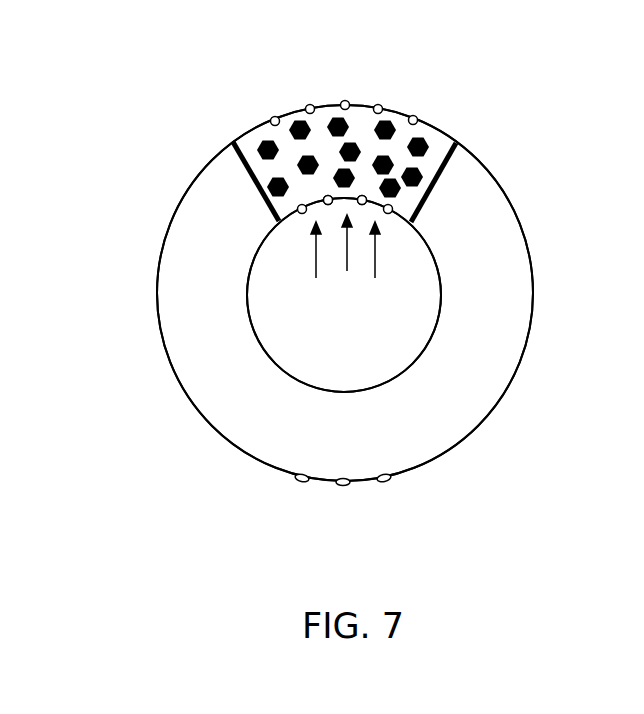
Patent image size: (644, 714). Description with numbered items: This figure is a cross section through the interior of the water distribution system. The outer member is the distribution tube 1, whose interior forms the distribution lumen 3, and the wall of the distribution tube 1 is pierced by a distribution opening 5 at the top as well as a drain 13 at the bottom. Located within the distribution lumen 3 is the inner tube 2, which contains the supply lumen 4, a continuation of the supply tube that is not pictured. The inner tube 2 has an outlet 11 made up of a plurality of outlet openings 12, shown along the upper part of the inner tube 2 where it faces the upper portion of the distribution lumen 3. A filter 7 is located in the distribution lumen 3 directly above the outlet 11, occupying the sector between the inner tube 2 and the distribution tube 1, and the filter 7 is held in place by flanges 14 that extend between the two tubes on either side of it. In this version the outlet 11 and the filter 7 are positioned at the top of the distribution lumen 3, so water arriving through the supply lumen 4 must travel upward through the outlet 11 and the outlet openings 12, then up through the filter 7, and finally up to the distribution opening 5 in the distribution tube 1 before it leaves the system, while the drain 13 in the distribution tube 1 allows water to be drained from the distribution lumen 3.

The distribution tube 1 is at (502, 192).
The inner tube 2 is at (420, 353).
The distribution lumen 3 is at (502, 332).
The supply lumen 4 is at (268, 310).
The distribution opening 5 is at (415, 117).
The filter 7 is at (428, 140).
The outlet 11 is at (328, 196).
The outlet openings 12 is at (303, 205).
The drain 13 is at (343, 487).
The flanges 14 is at (257, 183).